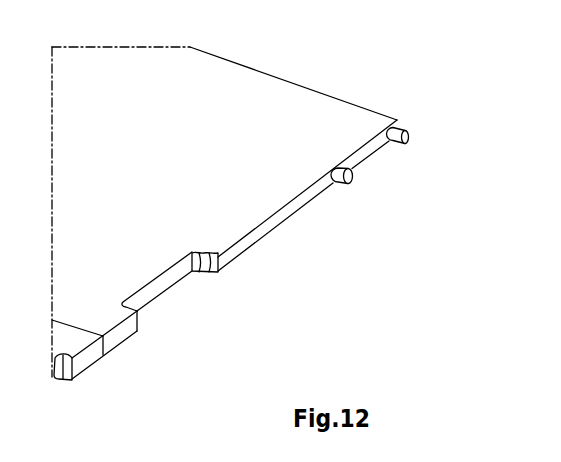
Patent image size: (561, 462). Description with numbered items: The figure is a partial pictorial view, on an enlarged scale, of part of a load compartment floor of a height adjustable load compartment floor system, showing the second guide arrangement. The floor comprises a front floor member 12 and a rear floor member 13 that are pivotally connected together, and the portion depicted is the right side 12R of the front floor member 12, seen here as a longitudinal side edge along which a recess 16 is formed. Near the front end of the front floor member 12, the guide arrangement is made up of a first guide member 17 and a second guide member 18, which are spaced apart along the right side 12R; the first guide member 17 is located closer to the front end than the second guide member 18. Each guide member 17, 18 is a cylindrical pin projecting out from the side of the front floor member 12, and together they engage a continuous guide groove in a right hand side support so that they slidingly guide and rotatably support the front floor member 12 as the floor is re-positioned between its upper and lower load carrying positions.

The front floor member 12 is at (316, 197).
The right side edge of front floor member 12R is at (243, 252).
The rear floor member 13 is at (87, 368).
The recess 16 is at (163, 292).
The first guide member 17 is at (417, 95).
The second guide member 18 is at (343, 168).